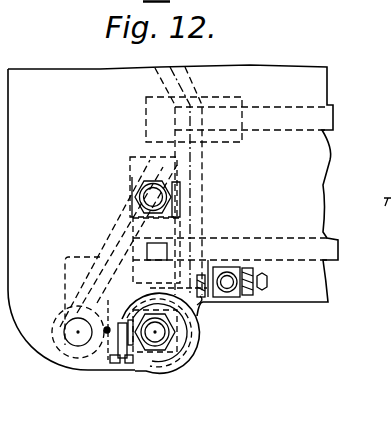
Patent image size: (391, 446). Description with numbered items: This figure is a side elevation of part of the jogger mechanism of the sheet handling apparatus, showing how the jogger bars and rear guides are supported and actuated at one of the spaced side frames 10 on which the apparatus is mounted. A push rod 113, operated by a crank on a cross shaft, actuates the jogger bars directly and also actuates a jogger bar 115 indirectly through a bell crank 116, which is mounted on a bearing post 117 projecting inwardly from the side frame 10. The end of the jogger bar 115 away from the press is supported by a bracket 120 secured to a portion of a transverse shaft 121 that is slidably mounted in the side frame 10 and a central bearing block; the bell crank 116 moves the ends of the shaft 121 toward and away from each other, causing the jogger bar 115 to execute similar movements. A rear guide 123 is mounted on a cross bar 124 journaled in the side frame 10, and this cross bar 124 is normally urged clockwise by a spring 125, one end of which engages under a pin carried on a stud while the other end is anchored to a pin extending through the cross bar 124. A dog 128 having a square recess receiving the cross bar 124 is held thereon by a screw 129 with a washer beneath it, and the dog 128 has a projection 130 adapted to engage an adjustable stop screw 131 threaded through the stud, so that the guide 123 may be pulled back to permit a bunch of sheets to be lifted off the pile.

The side frame 10 is at (75, 62).
The push rod 113 is at (338, 247).
The jogger bar 115 is at (330, 118).
The bell crank 116 is at (77, 256).
The bearing post 117 is at (127, 182).
The bracket 120 is at (136, 196).
The transverse shaft 121 is at (76, 330).
The rear guide 123 is at (203, 165).
The cross bar 124 is at (198, 352).
The spring 125 is at (203, 338).
The dog 128 is at (197, 305).
The screw 129 is at (112, 367).
The projection 130 is at (208, 257).
The adjustable stop screw 131 is at (266, 272).